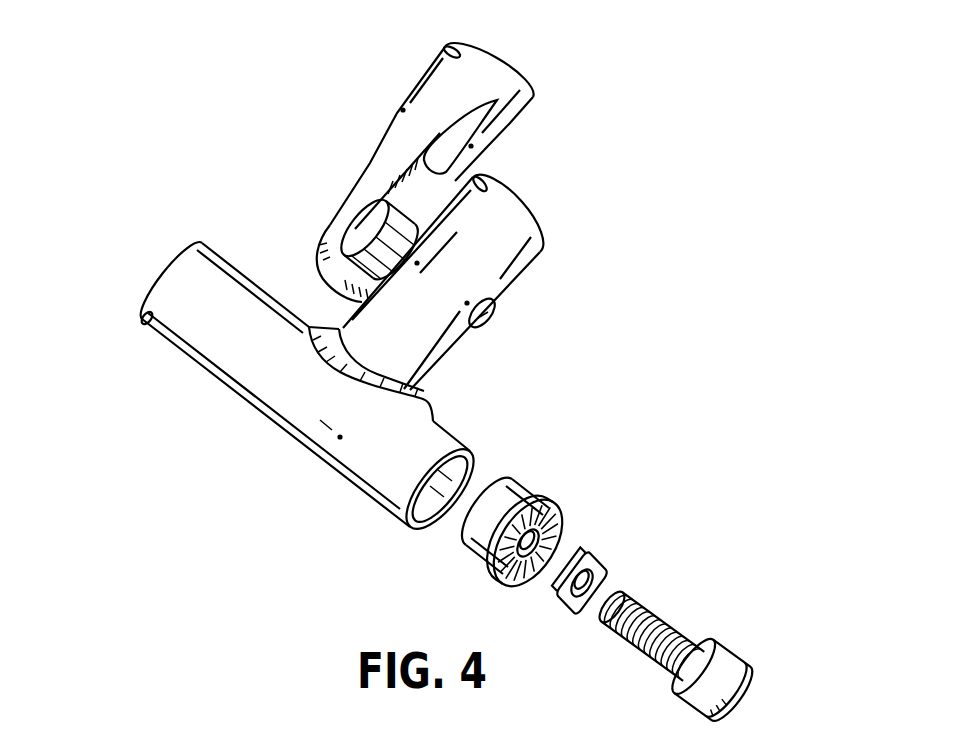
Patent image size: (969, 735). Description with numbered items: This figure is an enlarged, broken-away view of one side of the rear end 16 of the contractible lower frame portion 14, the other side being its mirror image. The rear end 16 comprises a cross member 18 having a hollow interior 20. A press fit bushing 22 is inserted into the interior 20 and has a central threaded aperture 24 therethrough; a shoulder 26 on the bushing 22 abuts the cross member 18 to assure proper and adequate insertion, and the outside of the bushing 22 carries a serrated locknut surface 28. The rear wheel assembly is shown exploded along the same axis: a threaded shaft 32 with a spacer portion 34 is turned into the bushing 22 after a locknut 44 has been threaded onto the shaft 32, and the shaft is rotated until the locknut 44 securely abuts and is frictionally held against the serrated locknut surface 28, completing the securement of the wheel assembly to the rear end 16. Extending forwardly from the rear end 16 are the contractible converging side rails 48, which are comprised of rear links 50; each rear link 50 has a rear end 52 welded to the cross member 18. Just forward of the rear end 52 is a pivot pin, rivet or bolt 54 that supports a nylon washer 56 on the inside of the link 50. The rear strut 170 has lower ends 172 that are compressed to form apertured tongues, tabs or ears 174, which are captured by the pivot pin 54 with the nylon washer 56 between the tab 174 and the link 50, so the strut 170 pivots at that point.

The lower frame portion 14 is at (437, 374).
The rear end 16 is at (289, 404).
The cross member 18 is at (313, 404).
The hollow interior 20 is at (424, 527).
The press fit bushing 22 is at (477, 556).
The central threaded aperture 24 is at (556, 514).
The shoulder 26 is at (550, 521).
The serrated locknut surface 28 is at (528, 543).
The threaded shaft 32 is at (684, 651).
The spacer portion 34 is at (727, 658).
The locknut 44 is at (597, 554).
The side rails 48 is at (457, 282).
The rear link 50 is at (492, 282).
The rear end of link 52 is at (436, 396).
The pivot pin 54 is at (490, 320).
The nylon washer 56 is at (363, 236).
The rear strut 170 is at (391, 161).
The lower ends 172 is at (308, 222).
The tabs 174 is at (355, 202).